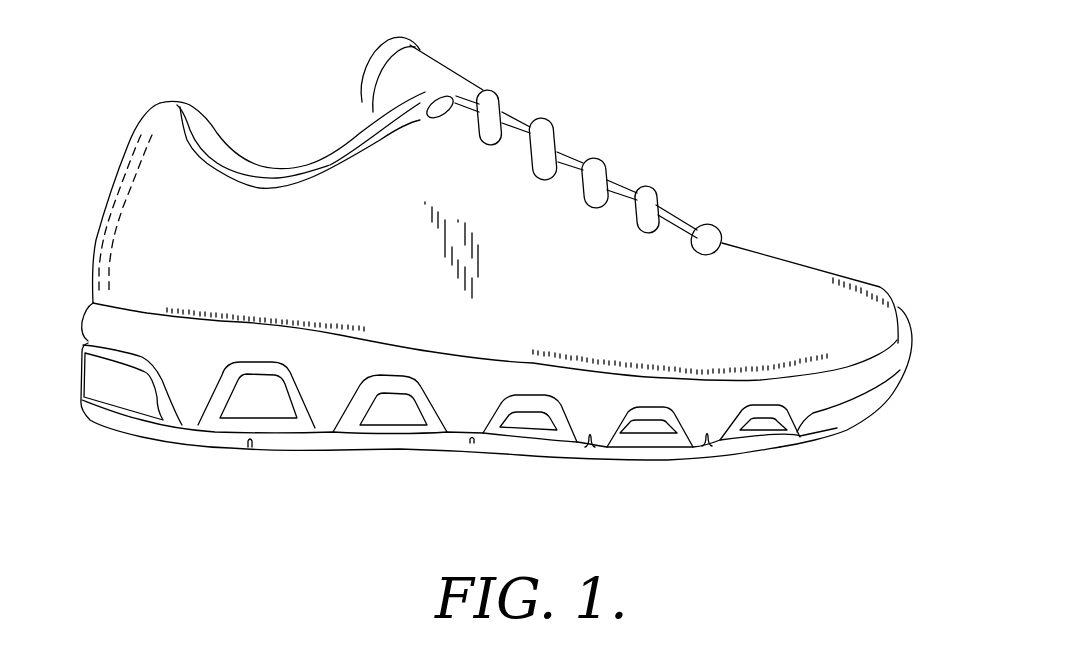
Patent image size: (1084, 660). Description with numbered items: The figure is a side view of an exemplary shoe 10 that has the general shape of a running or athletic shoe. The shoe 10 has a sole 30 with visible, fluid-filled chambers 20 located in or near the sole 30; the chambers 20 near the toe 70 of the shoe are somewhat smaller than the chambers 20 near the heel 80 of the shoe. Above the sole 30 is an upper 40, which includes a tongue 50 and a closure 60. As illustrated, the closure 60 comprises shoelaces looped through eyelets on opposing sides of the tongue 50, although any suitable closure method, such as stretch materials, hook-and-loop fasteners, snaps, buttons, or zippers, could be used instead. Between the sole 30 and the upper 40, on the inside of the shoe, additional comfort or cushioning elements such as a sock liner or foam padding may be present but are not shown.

The shoe 10 is at (654, 77).
The fluid-filled chambers 20 is at (527, 420).
The sole 30 is at (763, 455).
The upper 40 is at (803, 267).
The tongue 50 is at (421, 52).
The closure 60 is at (595, 168).
The toe 70 is at (912, 336).
The heel 80 is at (93, 268).